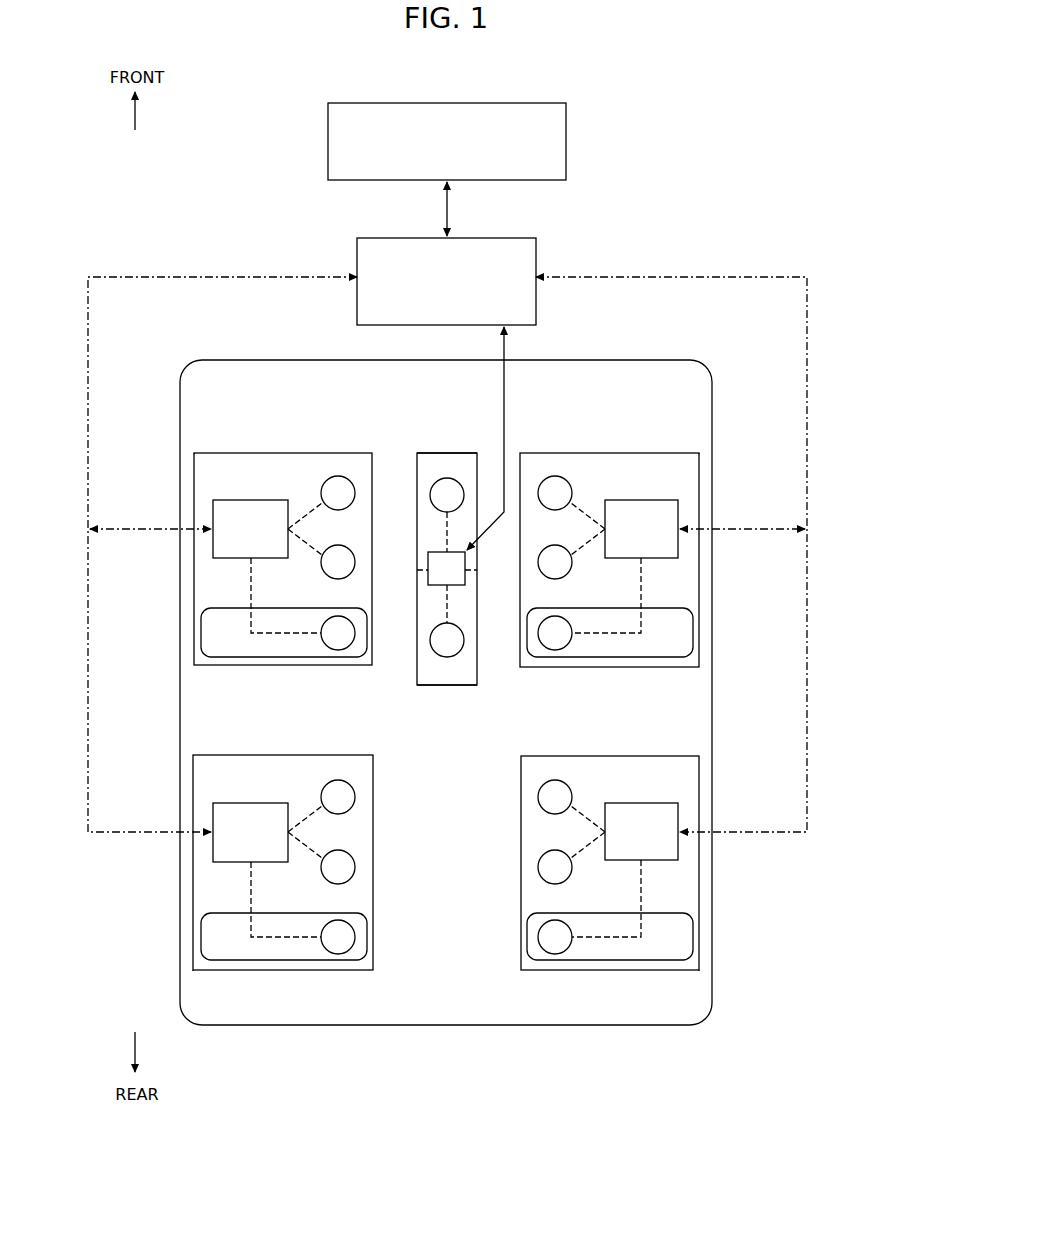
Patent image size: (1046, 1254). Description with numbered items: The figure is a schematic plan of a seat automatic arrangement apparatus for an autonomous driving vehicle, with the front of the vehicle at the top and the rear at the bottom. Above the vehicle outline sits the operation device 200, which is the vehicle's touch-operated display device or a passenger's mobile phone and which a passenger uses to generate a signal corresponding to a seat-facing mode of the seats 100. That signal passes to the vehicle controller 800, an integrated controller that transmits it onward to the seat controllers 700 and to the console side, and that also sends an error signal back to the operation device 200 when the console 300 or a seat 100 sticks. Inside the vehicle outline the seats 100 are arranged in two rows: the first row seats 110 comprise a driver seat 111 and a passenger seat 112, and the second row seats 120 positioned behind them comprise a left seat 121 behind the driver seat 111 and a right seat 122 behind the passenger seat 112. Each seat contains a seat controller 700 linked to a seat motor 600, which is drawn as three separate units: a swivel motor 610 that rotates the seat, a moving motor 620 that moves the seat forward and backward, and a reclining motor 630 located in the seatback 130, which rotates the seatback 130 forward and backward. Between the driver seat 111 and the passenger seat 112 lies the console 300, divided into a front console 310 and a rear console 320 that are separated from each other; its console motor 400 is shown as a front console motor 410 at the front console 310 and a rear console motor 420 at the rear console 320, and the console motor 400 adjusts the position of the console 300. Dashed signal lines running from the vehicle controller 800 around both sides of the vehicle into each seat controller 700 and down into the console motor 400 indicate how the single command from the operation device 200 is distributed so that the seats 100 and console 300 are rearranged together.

The seats 100 is at (702, 452).
The first row seats 110 is at (701, 583).
The driver seat 111 is at (248, 478).
The passenger seat 112 is at (655, 468).
The second row seats 120 is at (714, 903).
The left seat 121 is at (207, 780).
The right seat 122 is at (686, 780).
The seatback 130 is at (207, 632).
The operation device 200 is at (566, 140).
The console 300 is at (419, 451).
The front console 310 is at (465, 467).
The rear console 320 is at (464, 672).
The console motor 400 is at (447, 660).
The front console motor 410 is at (447, 495).
The rear console motor 420 is at (435, 646).
The seat motor 600 is at (324, 480).
The swivel motor 610 is at (338, 493).
The moving motor 620 is at (338, 563).
The reclining motor 630 is at (338, 640).
The seat controller 700 is at (212, 503).
The vehicle controller 800 is at (536, 245).